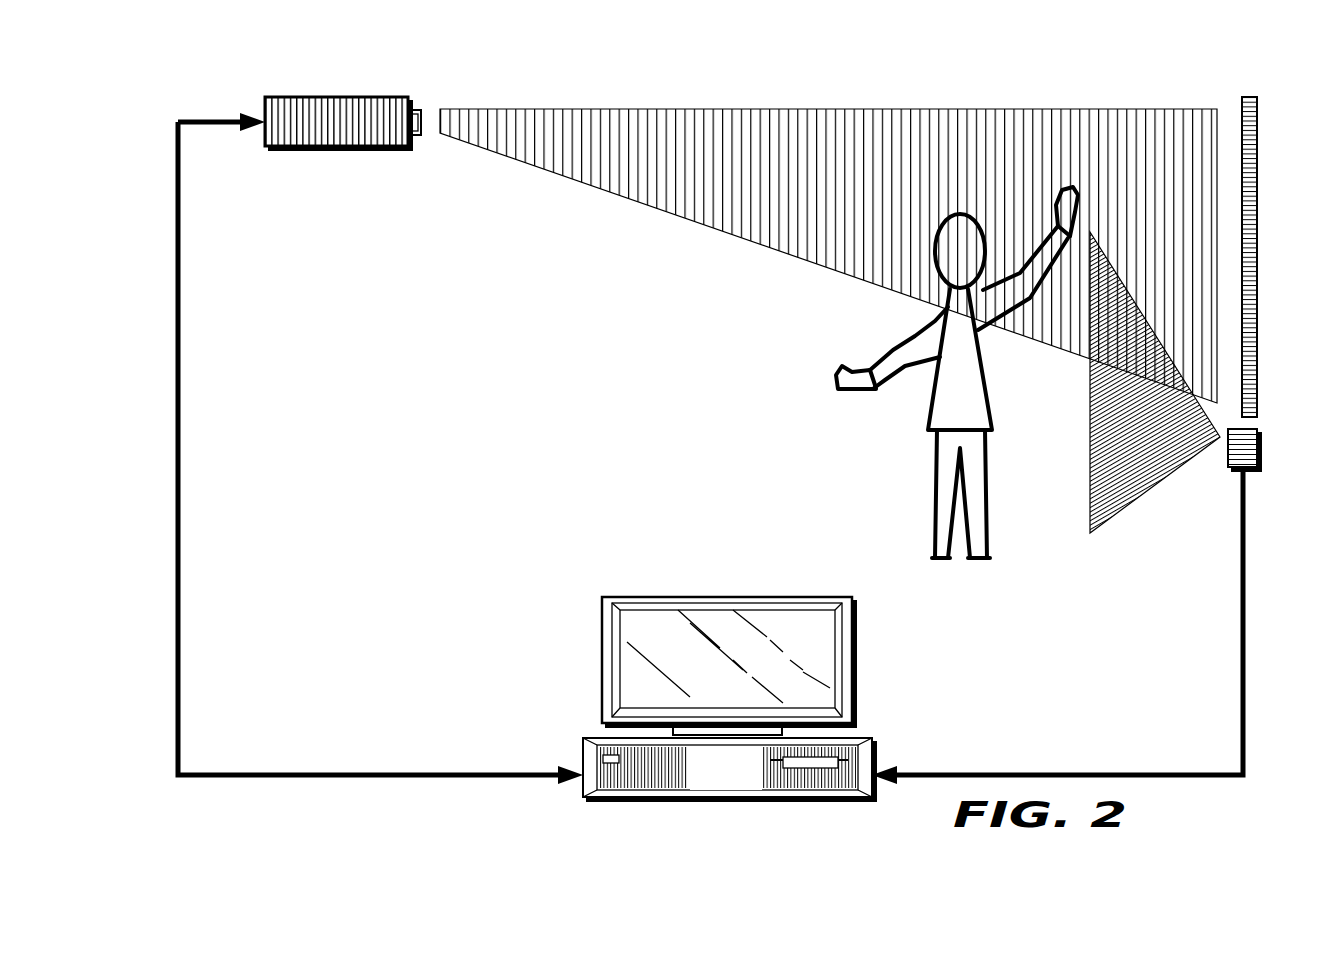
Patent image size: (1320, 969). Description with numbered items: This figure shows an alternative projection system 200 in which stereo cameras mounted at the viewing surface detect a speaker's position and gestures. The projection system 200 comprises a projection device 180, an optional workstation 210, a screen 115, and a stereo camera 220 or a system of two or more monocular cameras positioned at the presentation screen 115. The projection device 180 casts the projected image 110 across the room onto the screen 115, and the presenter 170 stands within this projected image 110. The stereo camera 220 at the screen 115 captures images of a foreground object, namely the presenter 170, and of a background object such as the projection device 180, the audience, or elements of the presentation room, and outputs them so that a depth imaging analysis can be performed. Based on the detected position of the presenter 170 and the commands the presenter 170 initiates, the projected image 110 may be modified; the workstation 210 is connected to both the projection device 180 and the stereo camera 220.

The projected image 110 is at (568, 109).
The screen 115 is at (1250, 97).
The presenter 170 is at (980, 560).
The projection device 180 is at (336, 97).
The projection system 200 is at (1062, 74).
The workstation 210 is at (728, 597).
The stereo camera 220 is at (1260, 453).